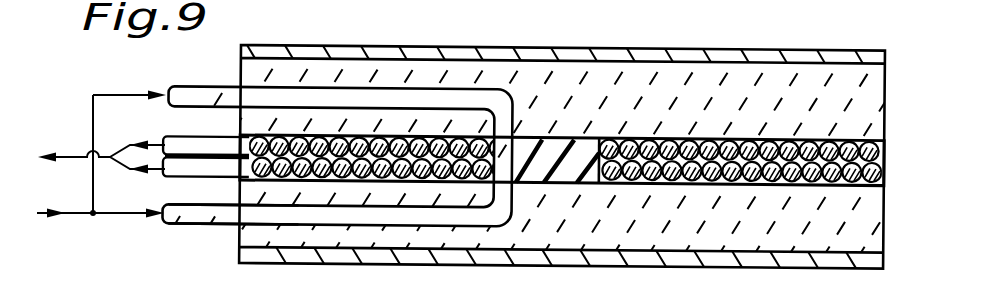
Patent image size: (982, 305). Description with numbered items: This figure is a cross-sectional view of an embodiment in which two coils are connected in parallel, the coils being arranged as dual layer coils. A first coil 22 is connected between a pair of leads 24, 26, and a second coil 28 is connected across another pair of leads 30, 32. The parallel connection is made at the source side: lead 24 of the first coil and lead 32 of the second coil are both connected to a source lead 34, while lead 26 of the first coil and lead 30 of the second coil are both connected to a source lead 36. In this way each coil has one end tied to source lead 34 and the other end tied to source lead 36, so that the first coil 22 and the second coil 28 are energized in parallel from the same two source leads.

The first coil 22 is at (455, 280).
The lead 24 is at (222, 86).
The lead 26 is at (173, 133).
The second coil 28 is at (562, 219).
The lead 30 is at (173, 183).
The lead 32 is at (190, 218).
The source lead 34 is at (75, 215).
The source lead 36 is at (70, 153).